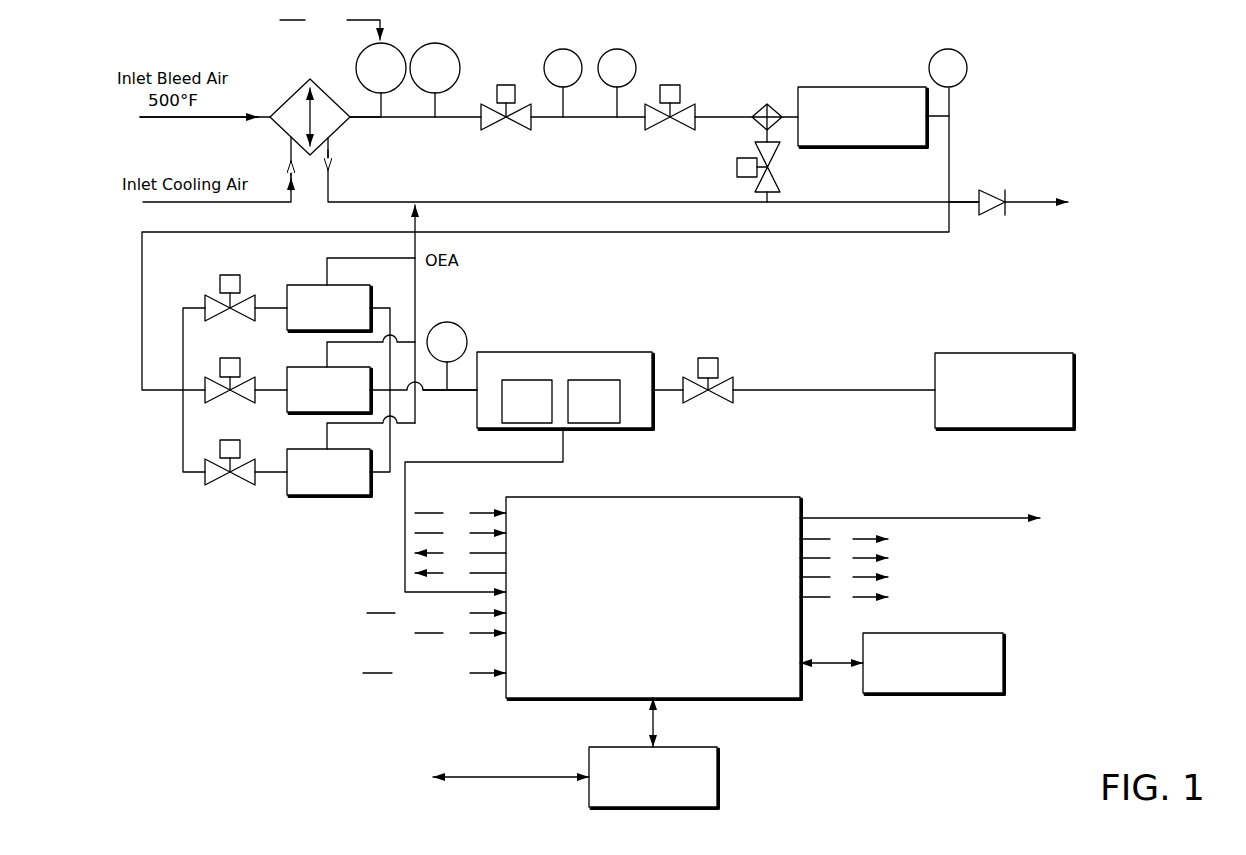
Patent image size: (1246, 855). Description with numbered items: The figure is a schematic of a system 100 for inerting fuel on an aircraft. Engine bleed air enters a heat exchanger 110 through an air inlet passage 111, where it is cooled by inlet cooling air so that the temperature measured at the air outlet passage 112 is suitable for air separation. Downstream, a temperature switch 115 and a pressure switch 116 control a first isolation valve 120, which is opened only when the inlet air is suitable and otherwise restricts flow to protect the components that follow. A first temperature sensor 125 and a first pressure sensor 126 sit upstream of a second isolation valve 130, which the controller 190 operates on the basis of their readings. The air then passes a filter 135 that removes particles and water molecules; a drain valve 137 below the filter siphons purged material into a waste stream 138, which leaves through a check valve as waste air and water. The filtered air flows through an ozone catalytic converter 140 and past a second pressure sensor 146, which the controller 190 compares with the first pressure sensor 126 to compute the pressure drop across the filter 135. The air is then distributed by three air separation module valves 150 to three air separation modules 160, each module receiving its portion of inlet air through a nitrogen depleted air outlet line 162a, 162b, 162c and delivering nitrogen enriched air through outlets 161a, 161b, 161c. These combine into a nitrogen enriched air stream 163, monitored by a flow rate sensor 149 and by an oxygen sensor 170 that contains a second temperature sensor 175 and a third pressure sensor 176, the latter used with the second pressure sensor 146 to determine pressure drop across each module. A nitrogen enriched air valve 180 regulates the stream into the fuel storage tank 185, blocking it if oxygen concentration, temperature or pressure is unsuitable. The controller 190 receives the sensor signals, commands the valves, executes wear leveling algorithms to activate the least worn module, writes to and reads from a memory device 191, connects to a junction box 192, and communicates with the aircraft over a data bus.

The system for inerting fuel 100 is at (1050, 602).
The heat exchanger 110 is at (293, 126).
The air inlet passage 111 is at (270, 117).
The air outlet passage 112 is at (350, 117).
The temperature switch 115 is at (456, 52).
The pressure switch 116 is at (401, 50).
The first isolation valve 120 is at (532, 105).
The first temperature sensor 125 is at (634, 57).
The first pressure sensor 126 is at (576, 54).
The second isolation valve 130 is at (688, 104).
The filter 135 is at (768, 103).
The drain valve 137 is at (763, 183).
The waste stream 138 is at (882, 205).
The ozone catalytic converter 140 is at (870, 86).
The second pressure sensor 146 is at (968, 58).
The flow rate sensor 149 is at (465, 333).
The air separation module valves 150 is at (208, 306).
The air separation modules 160 is at (306, 319).
The nitrogen enriched air outlet of first ASM 161a is at (370, 308).
The nitrogen enriched air outlet of second ASM 161b is at (373, 393).
The nitrogen enriched air outlet of third ASM 161c is at (373, 474).
The nitrogen depleted air outlet of first ASM 162a is at (327, 278).
The nitrogen depleted air outlet of second ASM 162b is at (327, 360).
The nitrogen depleted air outlet of third ASM 162c is at (327, 443).
The nitrogen enriched air stream 163 is at (460, 390).
The oxygen sensor 170 is at (565, 366).
The second temperature sensor 175 is at (594, 402).
The third pressure sensor 176 is at (527, 402).
The nitrogen enriched air valve 180 is at (727, 379).
The fuel storage tank 185 is at (974, 404).
The controller 190 is at (703, 497).
The memory device 191 is at (911, 686).
The junction box 192 is at (631, 797).